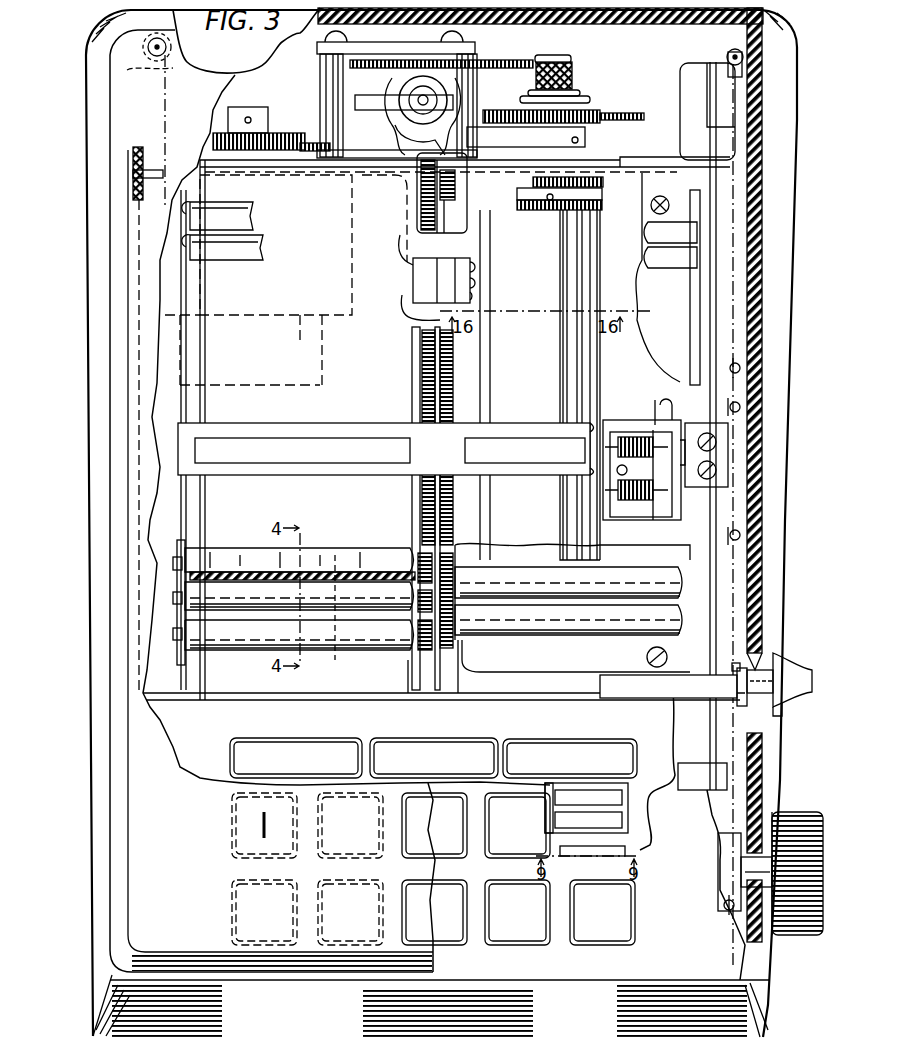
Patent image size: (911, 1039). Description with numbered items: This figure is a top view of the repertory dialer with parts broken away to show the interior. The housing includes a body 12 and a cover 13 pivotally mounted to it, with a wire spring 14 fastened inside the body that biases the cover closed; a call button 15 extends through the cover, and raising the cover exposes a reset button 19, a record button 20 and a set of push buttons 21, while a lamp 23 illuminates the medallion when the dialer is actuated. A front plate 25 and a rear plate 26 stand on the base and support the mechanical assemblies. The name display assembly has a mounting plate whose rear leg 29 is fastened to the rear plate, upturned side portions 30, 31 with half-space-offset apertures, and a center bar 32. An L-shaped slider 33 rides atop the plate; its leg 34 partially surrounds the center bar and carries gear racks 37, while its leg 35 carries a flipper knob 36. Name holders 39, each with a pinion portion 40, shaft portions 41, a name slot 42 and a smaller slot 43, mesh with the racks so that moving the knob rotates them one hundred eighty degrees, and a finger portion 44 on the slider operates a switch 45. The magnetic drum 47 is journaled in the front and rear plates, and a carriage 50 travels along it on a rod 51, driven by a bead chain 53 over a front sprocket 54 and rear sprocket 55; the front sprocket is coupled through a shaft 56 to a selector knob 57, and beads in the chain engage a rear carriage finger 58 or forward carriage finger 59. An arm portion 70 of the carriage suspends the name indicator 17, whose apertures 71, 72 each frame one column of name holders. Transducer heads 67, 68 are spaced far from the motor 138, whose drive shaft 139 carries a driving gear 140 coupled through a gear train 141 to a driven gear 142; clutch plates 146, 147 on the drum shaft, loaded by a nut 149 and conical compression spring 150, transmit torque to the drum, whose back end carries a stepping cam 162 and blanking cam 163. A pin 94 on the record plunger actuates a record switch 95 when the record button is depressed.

The body 12 is at (783, 216).
The cover 13 is at (138, 918).
The wire spring 14 is at (168, 90).
The call button 15 is at (437, 742).
The name indicator 17 is at (386, 433).
The reset button 19 is at (300, 740).
The record button 20 is at (566, 742).
The push buttons 21 is at (592, 938).
The lamp 23 is at (418, 92).
The front plate 25 is at (730, 772).
The rear plate 26 is at (690, 162).
The rear leg 29 is at (630, 157).
The side portion 30 is at (186, 290).
The side portion 31 is at (688, 318).
The center bar 32 is at (420, 324).
The slider 33 is at (407, 676).
The leg 34 is at (410, 390).
The leg 35 is at (548, 673).
The flipper knob 36 is at (792, 672).
The gear racks 37 is at (420, 356).
The name holders 39 is at (335, 610).
The pinion portion 40 is at (418, 565).
The shaft portions 41 is at (170, 545).
The name slot 42 is at (208, 548).
The slot 43 is at (572, 590).
The finger portion 44 is at (455, 212).
The switch 45 is at (462, 268).
The magnetic drum 47 is at (550, 271).
The carriage 50 is at (660, 402).
The rod 51 is at (705, 296).
The bead chain 53 is at (740, 368).
The front sprocket 54 is at (720, 830).
The rear sprocket 55 is at (730, 58).
The shaft 56 is at (750, 872).
The selector knob 57 is at (800, 812).
The rear carriage finger 58 is at (740, 406).
The forward carriage finger 59 is at (740, 536).
The transducer head 67 is at (636, 421).
The transducer head 68 is at (614, 522).
The arm portion 70 is at (720, 460).
The aperture 71 is at (263, 437).
The aperture 72 is at (526, 437).
The pin 94 is at (545, 793).
The record switch 95 is at (622, 820).
The motor 138 is at (352, 232).
The drive shaft 139 is at (260, 108).
The driving gear 140 is at (272, 130).
The gear train 141 is at (470, 92).
The driven gear 142 is at (640, 116).
The clutch plate 146 is at (582, 142).
The clutch plate 147 is at (582, 108).
The nut 149 is at (573, 58).
The conical compression spring 150 is at (575, 80).
The stepping cam 162 is at (528, 208).
The blanking cam 163 is at (540, 189).